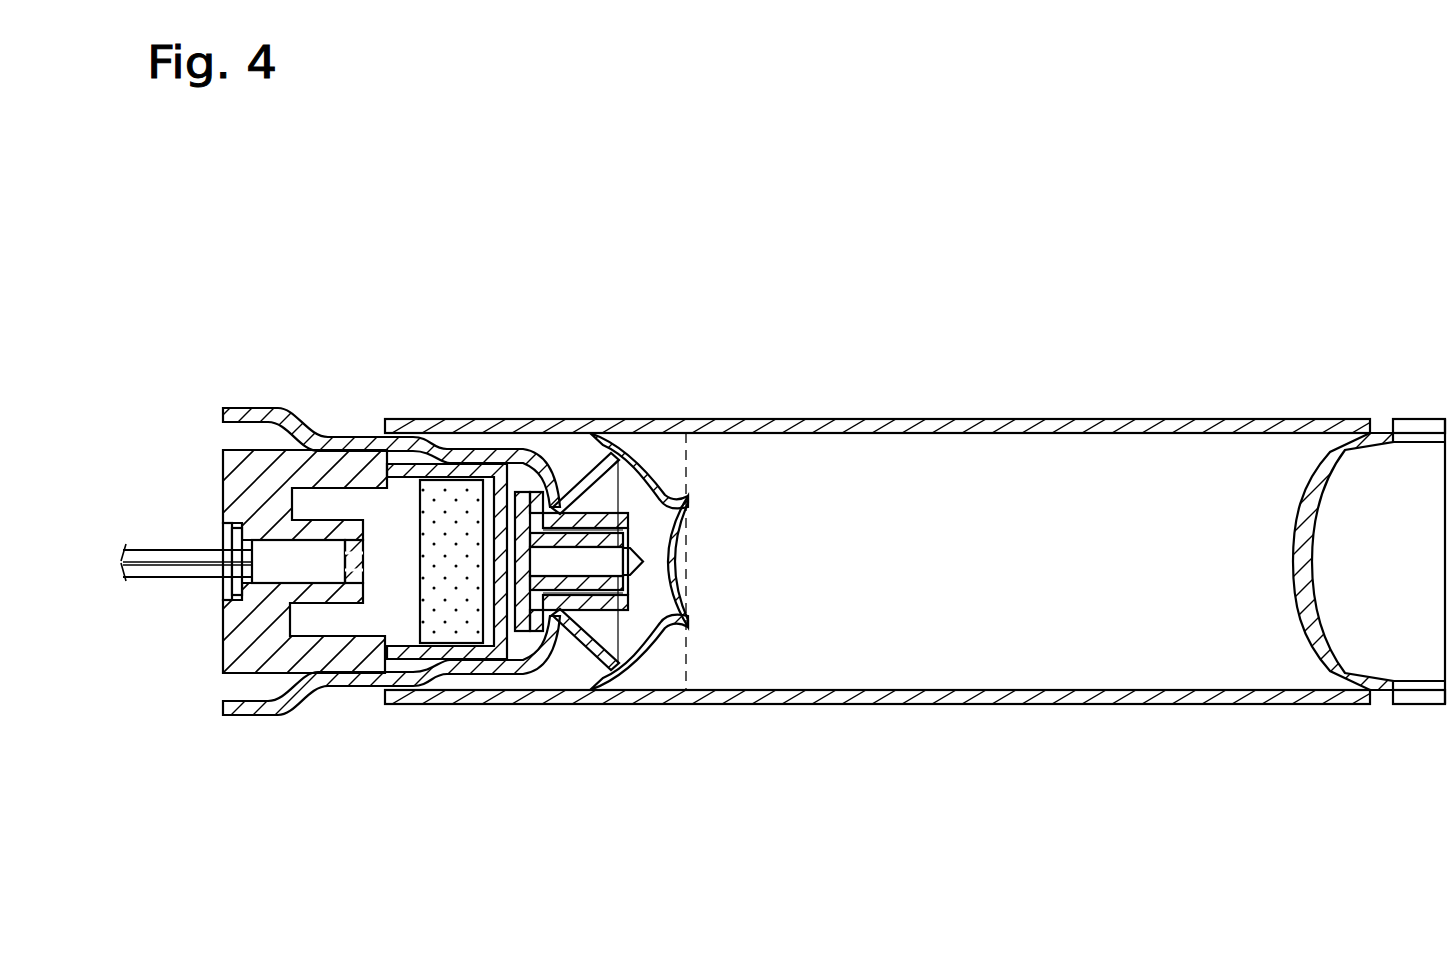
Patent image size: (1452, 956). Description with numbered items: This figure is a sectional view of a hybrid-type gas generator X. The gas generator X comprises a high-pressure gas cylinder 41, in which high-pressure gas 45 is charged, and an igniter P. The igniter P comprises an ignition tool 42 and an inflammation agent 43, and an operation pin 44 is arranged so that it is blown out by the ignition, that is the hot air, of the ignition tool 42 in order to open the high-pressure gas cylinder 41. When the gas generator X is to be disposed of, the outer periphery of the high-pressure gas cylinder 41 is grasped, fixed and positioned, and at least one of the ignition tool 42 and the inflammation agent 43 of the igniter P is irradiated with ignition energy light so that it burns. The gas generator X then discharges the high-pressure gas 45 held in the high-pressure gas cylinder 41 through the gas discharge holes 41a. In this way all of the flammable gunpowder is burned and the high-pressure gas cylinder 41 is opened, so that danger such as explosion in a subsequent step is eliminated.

The hybrid-type gas generator X is at (911, 407).
The high-pressure gas cylinder 41 is at (855, 697).
The gas discharge holes 41a is at (522, 420).
The igniter P is at (412, 815).
The ignition tool 42 is at (288, 568).
The inflammation agent 43 is at (447, 617).
The operation pin 44 is at (582, 560).
The high-pressure gas 45 is at (1072, 647).